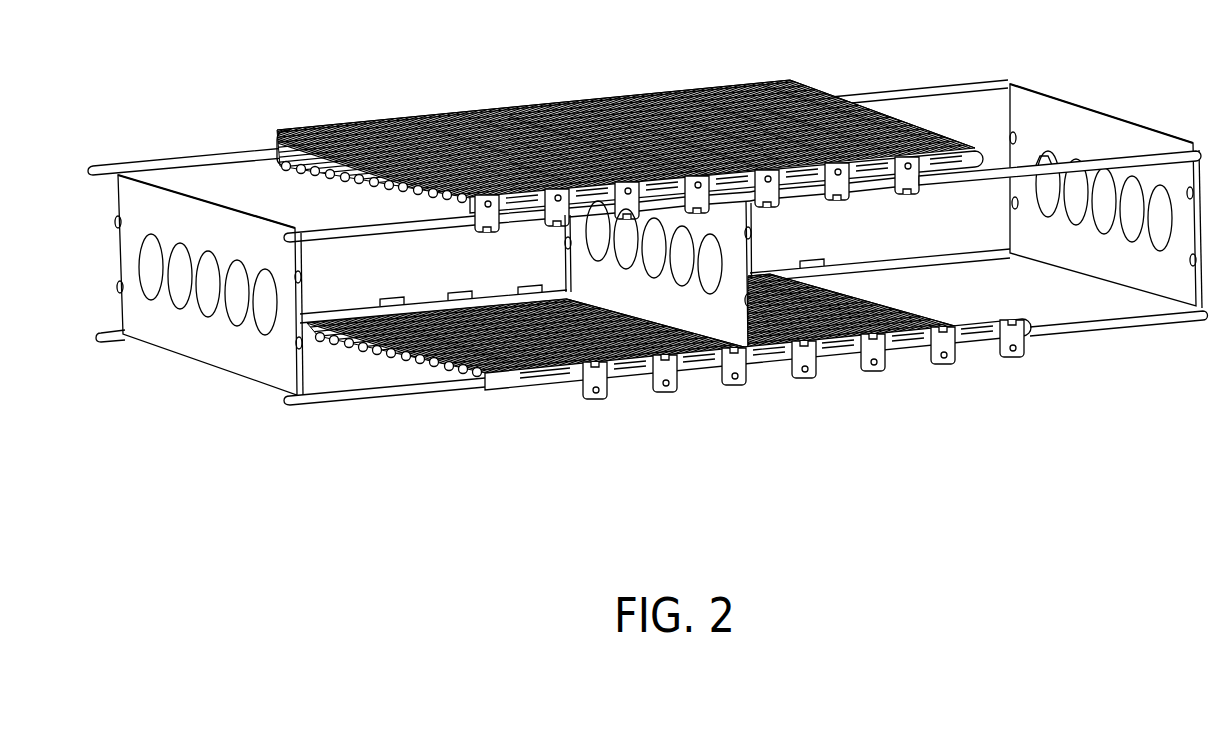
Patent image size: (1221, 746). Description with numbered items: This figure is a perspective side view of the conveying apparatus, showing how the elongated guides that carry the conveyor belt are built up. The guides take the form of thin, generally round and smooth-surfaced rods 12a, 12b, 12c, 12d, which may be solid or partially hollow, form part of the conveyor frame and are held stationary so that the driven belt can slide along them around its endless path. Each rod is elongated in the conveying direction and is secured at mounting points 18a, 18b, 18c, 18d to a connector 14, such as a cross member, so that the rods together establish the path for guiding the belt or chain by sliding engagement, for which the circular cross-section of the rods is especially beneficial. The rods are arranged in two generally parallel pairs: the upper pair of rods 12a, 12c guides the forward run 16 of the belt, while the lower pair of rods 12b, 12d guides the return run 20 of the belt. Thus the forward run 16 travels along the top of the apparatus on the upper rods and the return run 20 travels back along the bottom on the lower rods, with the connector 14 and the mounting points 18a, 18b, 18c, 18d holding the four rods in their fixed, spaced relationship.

The rod 12a is at (942, 75).
The rod 12b is at (982, 242).
The rod 12c is at (1188, 135).
The rod 12d is at (1121, 338).
The connector 14 is at (197, 374).
The forward run 16 is at (545, 97).
The mounting point 18a is at (113, 158).
The mounting point 18b is at (119, 348).
The mounting point 18c is at (304, 241).
The mounting point 18d is at (308, 413).
The return run 20 is at (778, 396).